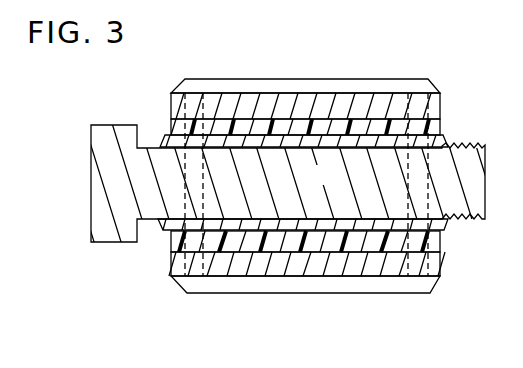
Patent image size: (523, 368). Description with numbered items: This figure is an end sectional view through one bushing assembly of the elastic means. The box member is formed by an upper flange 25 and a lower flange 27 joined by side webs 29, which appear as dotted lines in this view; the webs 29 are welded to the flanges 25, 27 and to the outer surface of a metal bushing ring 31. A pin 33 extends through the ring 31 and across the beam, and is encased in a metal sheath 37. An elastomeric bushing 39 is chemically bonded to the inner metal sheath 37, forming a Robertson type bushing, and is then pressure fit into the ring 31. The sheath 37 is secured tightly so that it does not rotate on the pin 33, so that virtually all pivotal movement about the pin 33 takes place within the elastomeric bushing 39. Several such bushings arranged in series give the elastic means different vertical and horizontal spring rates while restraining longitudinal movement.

The upper flange 25 is at (327, 85).
The lower flange 27 is at (424, 283).
The side webs 29 is at (186, 98).
The metal bushing ring 31 is at (367, 98).
The pin 33 is at (334, 188).
The metal sheath 37 is at (442, 143).
The elastomeric bushing 39 is at (182, 129).